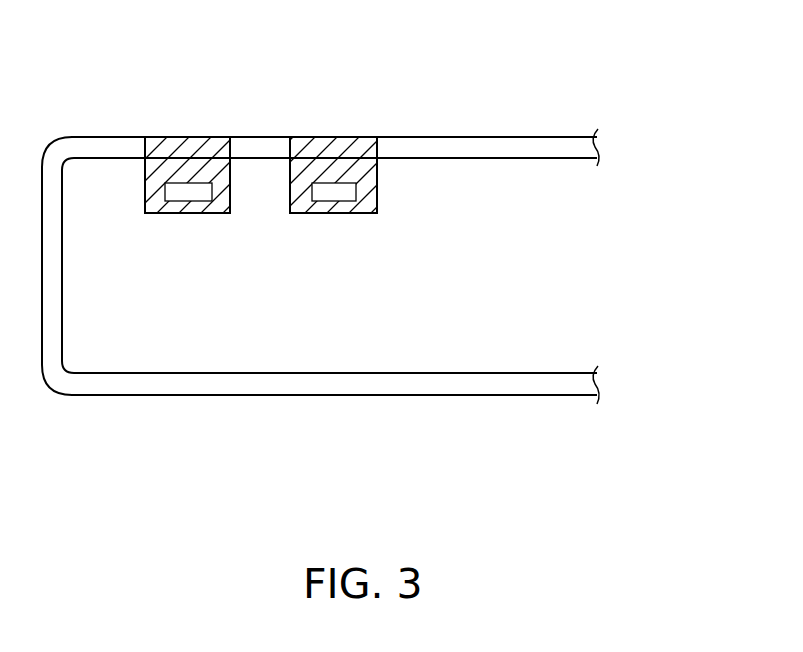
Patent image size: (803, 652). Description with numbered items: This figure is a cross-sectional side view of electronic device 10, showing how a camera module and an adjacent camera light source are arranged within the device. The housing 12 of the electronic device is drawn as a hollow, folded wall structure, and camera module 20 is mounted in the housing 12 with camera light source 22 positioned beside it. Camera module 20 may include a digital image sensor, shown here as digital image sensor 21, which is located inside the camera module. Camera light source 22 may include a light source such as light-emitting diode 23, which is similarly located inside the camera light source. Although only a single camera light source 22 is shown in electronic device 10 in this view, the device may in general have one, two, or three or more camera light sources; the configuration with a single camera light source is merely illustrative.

The electronic device 10 is at (654, 72).
The housing 12 is at (462, 145).
The camera module 20 is at (218, 218).
The digital image sensor 21 is at (188, 195).
The camera light source 22 is at (292, 292).
The light-emitting diode 23 is at (335, 197).